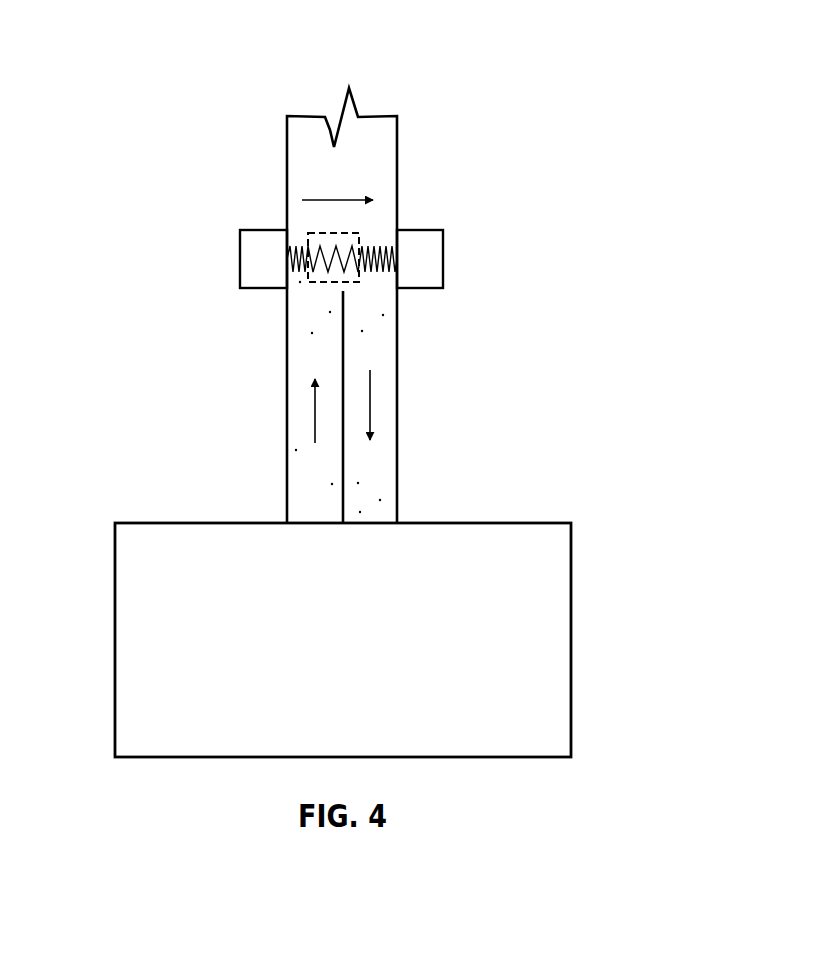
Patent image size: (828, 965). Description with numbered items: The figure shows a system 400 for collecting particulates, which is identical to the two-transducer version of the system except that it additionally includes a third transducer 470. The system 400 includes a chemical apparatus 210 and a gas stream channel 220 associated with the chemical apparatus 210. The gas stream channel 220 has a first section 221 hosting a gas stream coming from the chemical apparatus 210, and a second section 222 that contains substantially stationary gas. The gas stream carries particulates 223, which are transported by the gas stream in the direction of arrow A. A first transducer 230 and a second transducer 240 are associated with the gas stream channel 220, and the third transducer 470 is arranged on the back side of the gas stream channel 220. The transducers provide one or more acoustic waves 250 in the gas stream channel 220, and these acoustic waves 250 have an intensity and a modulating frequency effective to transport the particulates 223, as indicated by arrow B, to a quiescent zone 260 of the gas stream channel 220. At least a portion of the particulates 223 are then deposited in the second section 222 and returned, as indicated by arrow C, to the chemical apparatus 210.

The system 400 is at (170, 51).
The third transducer 470 is at (310, 232).
The chemical apparatus 210 is at (557, 588).
The gas stream channel 220 is at (286, 330).
The first section 221 is at (310, 362).
The second section 222 is at (383, 357).
The particulates 223 is at (308, 508).
The first transducer 230 is at (238, 259).
The second transducer 240 is at (428, 257).
The acoustic waves 250 is at (380, 235).
The quiescent zone 260 is at (374, 279).
The arrow A is at (310, 420).
The arrow B is at (315, 197).
The arrow C is at (372, 405).